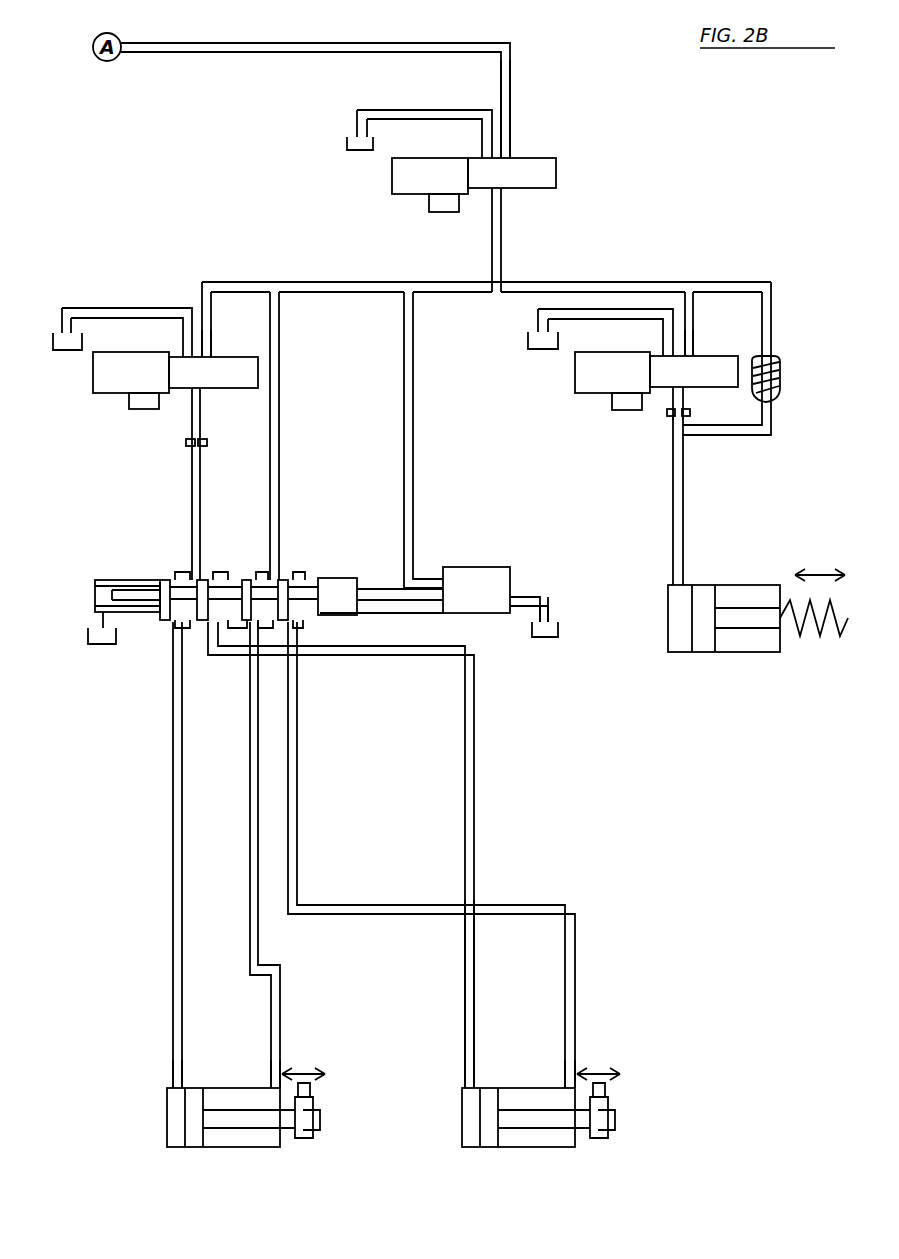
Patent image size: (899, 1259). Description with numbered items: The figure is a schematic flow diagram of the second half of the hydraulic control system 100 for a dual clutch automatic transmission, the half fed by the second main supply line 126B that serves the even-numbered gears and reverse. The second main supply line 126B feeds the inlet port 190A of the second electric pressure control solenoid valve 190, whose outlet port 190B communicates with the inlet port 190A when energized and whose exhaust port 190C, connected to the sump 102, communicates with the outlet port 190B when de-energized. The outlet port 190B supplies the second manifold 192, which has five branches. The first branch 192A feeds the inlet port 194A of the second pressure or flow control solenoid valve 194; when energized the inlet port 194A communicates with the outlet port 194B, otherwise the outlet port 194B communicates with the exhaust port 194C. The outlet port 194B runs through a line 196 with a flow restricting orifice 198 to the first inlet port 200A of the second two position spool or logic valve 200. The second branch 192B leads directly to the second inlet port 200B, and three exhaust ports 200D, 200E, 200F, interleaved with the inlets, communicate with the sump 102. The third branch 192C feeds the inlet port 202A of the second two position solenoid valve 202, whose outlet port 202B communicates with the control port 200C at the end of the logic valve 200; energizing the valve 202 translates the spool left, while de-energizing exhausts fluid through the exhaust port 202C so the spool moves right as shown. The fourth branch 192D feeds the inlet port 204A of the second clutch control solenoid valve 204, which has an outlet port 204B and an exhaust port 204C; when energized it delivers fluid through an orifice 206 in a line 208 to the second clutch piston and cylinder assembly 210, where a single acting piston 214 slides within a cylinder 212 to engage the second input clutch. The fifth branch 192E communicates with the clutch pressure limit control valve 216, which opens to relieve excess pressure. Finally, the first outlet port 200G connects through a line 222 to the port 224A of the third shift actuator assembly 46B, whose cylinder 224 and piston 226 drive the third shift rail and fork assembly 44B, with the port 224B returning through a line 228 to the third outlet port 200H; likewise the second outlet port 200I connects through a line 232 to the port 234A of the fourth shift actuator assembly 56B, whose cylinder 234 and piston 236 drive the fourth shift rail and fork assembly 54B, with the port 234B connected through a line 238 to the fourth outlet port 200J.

The hydraulic control system 100 is at (682, 162).
The sump 102 is at (347, 140).
The second main supply line 126B is at (508, 98).
The second electric pressure control solenoid valve 190 is at (404, 214).
The inlet port 190A is at (505, 158).
The outlet port 190B is at (499, 196).
The exhaust port 190C is at (482, 156).
The second manifold 192 is at (500, 282).
The first branch 192A is at (202, 295).
The second branch 192B is at (275, 388).
The third branch 192C is at (410, 312).
The fourth branch 192D is at (697, 292).
The fifth branch 192E is at (775, 297).
The second electric pressure or flow control solenoid valve 194 is at (90, 420).
The inlet port 194A is at (207, 356).
The outlet port 194B is at (199, 396).
The exhaust port 194C is at (184, 354).
The line 196 is at (190, 436).
The flow restricting orifice 198 is at (206, 446).
The second two position spool or logic valve 200 is at (92, 662).
The first inlet port 200A is at (178, 578).
The second inlet port 200B is at (275, 578).
The control port 200C is at (360, 613).
The exhaust port 200D is at (150, 580).
The exhaust port 200E is at (242, 578).
The exhaust port 200F is at (318, 578).
The first outlet port 200G is at (180, 628).
The third outlet port 200H is at (250, 625).
The second outlet port 200I is at (222, 578).
The fourth outlet port 200J is at (300, 620).
The second two position (on-off) solenoid valve 202 is at (502, 526).
The inlet port 202A is at (440, 575).
The outlet port 202B is at (470, 652).
The exhaust port 202C is at (515, 597).
The second electric pressure or flow clutch control solenoid valve 204 is at (590, 407).
The inlet port 204A is at (692, 356).
The outlet port 204B is at (683, 390).
The exhaust port 204C is at (667, 354).
The orifice 206 is at (665, 420).
The line 208 is at (684, 478).
The second clutch piston and cylinder assembly 210 is at (770, 543).
The cylinder 212 is at (668, 600).
The single acting piston 214 is at (708, 592).
The clutch pressure limit control valve 216 is at (780, 392).
The line 222 is at (172, 842).
The cylinder or housing 224 is at (235, 1148).
The port 224A is at (170, 1090).
The port 224B is at (272, 1085).
The piston 226 is at (195, 1140).
The line 228 is at (250, 842).
The line 232 is at (466, 978).
The housing or cylinder 234 is at (528, 1148).
The port 234A is at (464, 1090).
The port 234B is at (566, 1085).
The piston 236 is at (488, 1140).
The line 238 is at (562, 908).
The third shift rail and fork assembly 44B is at (307, 1130).
The third shift actuator assembly 46B is at (152, 1168).
The fourth shift rail and fork assembly 54B is at (602, 1130).
The fourth shift actuator assembly 56B is at (472, 1168).